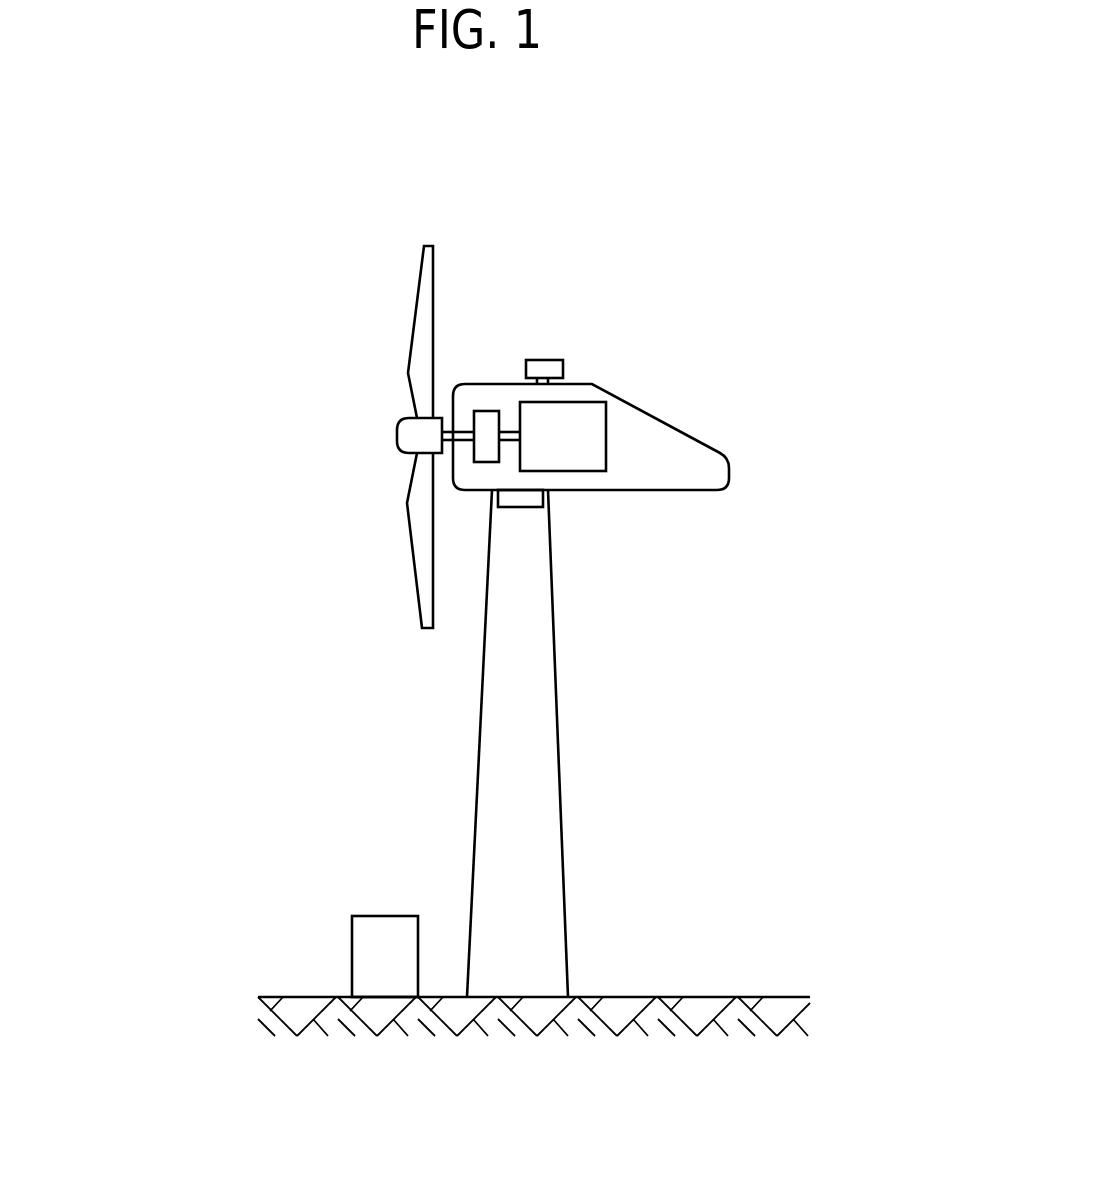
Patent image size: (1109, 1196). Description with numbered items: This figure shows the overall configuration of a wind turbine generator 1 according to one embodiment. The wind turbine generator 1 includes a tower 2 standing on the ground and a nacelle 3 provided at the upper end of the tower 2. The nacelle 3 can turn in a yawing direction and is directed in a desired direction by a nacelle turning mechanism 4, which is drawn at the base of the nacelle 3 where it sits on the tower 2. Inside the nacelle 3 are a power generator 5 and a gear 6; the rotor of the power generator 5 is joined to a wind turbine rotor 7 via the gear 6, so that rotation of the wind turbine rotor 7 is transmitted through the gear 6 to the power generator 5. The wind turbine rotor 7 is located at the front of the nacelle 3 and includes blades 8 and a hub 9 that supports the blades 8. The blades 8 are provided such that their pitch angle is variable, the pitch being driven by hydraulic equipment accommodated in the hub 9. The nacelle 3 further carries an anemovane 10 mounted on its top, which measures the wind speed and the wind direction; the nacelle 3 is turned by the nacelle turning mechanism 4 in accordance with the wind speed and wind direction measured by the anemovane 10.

The wind turbine generator 1 is at (594, 266).
The tower 2 is at (560, 782).
The nacelle 3 is at (681, 430).
The nacelle turning mechanism 4 is at (520, 507).
The power generator 5 is at (588, 402).
The gear 6 is at (488, 411).
The wind turbine rotor 7 is at (267, 437).
The blades 8 is at (415, 313).
The hub 9 is at (397, 438).
The anemovane 10 is at (543, 360).